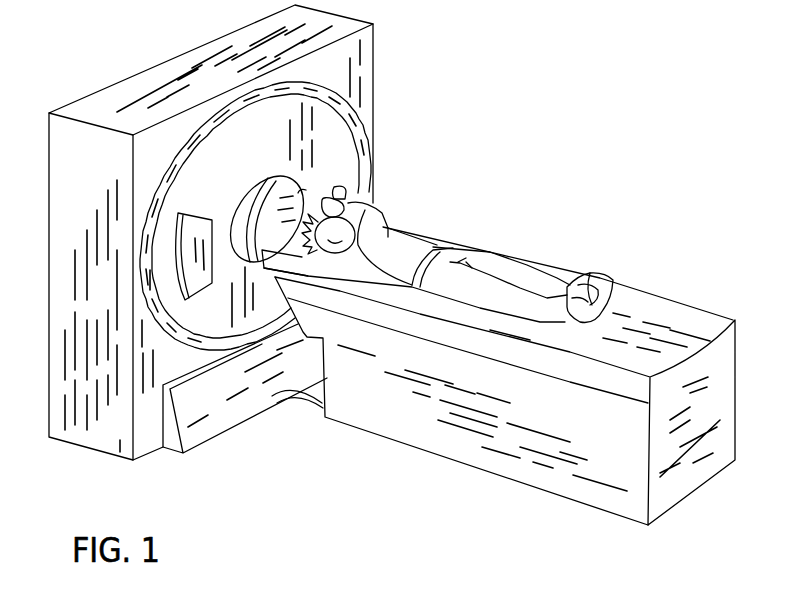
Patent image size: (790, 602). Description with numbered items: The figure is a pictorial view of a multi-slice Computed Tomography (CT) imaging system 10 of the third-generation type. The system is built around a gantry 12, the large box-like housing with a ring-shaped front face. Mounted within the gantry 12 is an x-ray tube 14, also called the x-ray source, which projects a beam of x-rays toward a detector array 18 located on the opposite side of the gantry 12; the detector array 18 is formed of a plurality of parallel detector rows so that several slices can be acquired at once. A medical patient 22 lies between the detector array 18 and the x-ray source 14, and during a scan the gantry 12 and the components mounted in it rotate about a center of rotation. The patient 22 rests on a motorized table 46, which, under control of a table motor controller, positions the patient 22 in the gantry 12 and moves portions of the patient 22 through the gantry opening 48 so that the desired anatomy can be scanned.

The CT imaging system 10 is at (298, 418).
The gantry 12 is at (210, 113).
The x-ray tube 14 is at (343, 198).
The detector array 18 is at (192, 290).
The patient 22 is at (388, 235).
The motorized table 46 is at (405, 422).
The gantry opening 48 is at (298, 193).